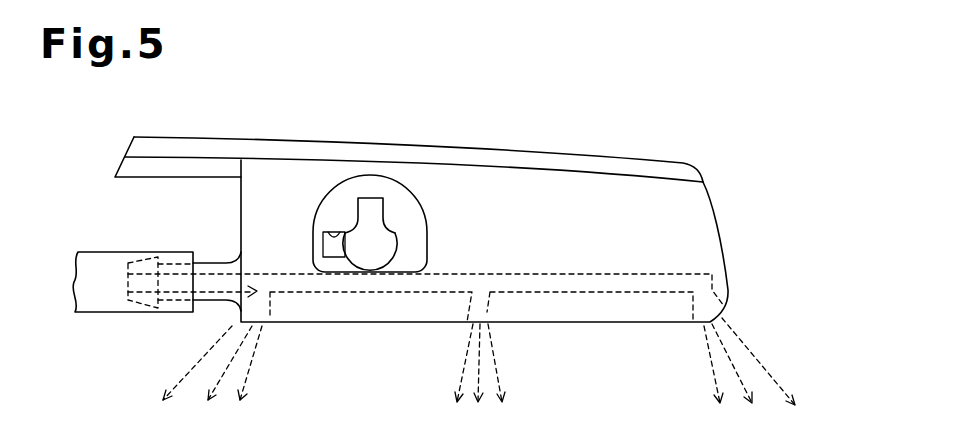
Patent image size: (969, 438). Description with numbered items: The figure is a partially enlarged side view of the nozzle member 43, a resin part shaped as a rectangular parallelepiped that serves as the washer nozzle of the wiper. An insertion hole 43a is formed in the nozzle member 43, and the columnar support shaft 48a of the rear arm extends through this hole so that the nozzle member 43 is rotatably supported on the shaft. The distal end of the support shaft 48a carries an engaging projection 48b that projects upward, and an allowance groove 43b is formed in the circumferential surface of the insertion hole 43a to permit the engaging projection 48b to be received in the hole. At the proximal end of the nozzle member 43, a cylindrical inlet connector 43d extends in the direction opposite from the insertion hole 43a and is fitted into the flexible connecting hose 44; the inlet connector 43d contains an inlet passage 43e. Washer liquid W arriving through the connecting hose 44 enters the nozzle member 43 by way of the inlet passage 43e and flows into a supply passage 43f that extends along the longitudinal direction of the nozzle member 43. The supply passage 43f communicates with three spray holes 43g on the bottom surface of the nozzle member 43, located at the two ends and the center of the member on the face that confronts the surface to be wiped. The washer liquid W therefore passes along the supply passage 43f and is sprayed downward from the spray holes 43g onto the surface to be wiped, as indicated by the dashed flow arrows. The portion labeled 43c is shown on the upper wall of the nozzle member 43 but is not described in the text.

The nozzle member 43 is at (277, 140).
The insertion hole 43a is at (412, 225).
The allowance groove 43b is at (329, 237).
The top plate 43c is at (524, 168).
The inlet connector 43d is at (212, 262).
The inlet passage 43e is at (177, 278).
The supply passage 43f is at (599, 270).
The spray holes 43g is at (724, 308).
The connecting hose 44 is at (98, 251).
The support shaft 48a is at (386, 251).
The engaging projection 48b is at (383, 205).
The washer liquid W is at (204, 350).